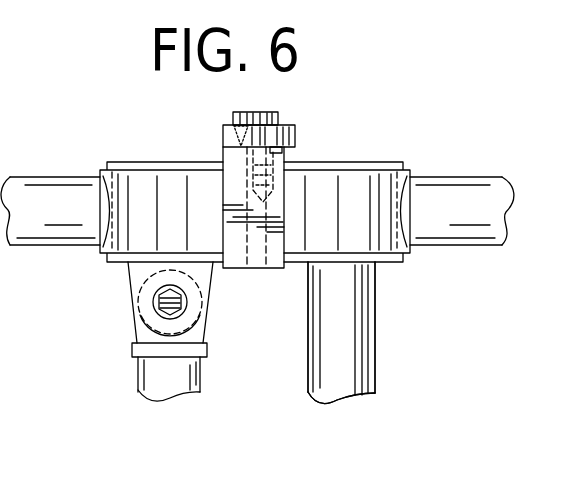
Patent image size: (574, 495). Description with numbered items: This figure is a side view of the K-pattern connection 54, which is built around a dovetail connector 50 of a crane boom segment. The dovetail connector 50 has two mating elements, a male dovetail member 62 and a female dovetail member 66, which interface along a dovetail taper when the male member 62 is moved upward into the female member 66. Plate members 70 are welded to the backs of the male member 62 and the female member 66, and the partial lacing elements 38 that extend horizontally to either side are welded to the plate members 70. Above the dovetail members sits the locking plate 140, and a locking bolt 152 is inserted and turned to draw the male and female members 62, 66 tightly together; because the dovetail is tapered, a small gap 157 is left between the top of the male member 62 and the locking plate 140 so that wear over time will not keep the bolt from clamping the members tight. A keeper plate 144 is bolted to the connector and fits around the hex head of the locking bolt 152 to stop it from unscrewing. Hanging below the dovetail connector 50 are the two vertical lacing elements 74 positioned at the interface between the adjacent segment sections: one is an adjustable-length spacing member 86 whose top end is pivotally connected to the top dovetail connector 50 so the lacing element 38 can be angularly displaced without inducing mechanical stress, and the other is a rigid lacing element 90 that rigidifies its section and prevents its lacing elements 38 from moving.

The partial lacing element 38 is at (46, 246).
The dovetail connector 50 is at (370, 120).
The K-pattern connection 54 is at (303, 281).
The male dovetail member 62 is at (273, 264).
The female dovetail member 66 is at (235, 257).
The plate member 70 is at (169, 188).
The vertical lacing element 74 is at (140, 372).
The adjustable-length spacing member 86 is at (161, 403).
The rigid lacing element 90 is at (360, 403).
The locking plate 140 is at (295, 138).
The keeper plate 144 is at (233, 125).
The locking bolt 152 is at (278, 114).
The gap 157 is at (281, 153).